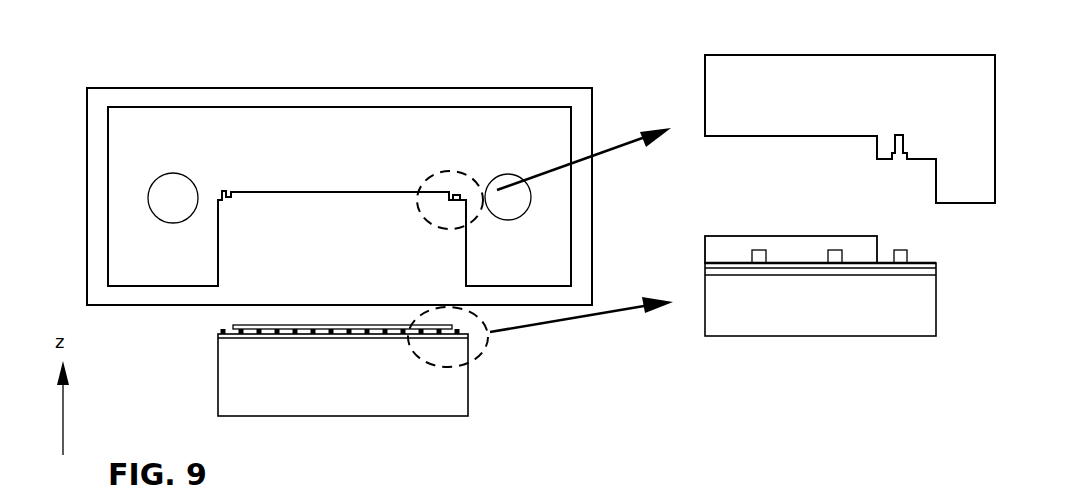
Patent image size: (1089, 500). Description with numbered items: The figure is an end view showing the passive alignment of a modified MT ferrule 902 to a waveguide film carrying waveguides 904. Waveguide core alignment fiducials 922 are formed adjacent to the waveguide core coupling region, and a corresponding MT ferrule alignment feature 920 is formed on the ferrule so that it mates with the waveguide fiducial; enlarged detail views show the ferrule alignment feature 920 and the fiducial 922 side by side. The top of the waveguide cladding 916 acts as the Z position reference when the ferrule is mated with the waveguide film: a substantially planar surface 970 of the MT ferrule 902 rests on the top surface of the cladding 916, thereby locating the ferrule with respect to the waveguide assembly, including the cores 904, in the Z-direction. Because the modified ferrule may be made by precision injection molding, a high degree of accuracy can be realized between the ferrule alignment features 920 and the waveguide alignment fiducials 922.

The MT ferrule 902 is at (177, 88).
The MT ferrule alignment feature 920 is at (458, 190).
The substantially planar surface 970 is at (782, 136).
The waveguide cladding 916 is at (247, 325).
The waveguides 904 is at (280, 334).
The waveguide core alignment fiducials 922 is at (462, 330).